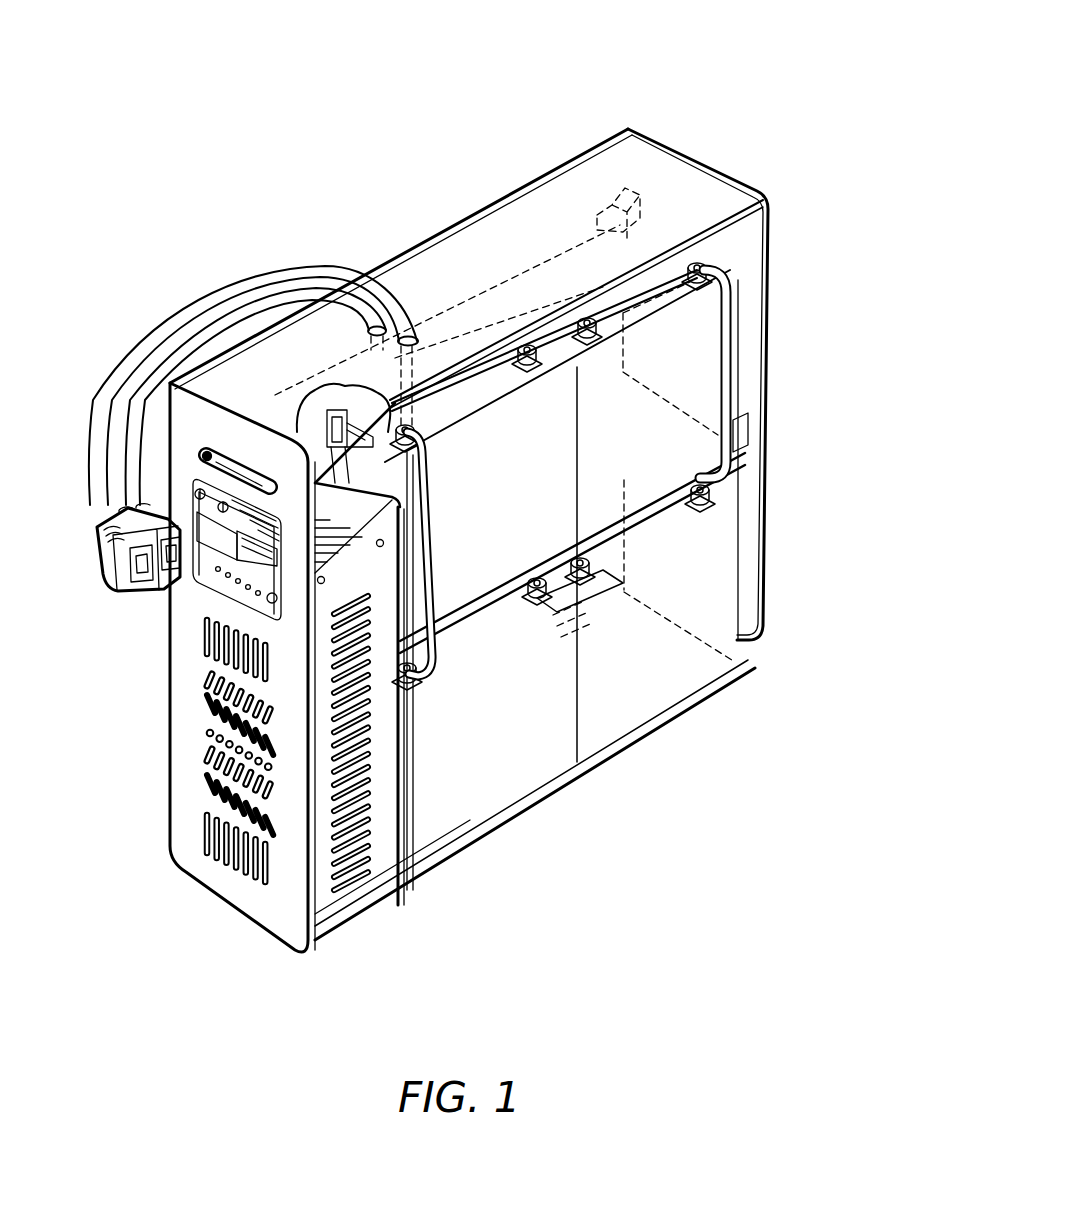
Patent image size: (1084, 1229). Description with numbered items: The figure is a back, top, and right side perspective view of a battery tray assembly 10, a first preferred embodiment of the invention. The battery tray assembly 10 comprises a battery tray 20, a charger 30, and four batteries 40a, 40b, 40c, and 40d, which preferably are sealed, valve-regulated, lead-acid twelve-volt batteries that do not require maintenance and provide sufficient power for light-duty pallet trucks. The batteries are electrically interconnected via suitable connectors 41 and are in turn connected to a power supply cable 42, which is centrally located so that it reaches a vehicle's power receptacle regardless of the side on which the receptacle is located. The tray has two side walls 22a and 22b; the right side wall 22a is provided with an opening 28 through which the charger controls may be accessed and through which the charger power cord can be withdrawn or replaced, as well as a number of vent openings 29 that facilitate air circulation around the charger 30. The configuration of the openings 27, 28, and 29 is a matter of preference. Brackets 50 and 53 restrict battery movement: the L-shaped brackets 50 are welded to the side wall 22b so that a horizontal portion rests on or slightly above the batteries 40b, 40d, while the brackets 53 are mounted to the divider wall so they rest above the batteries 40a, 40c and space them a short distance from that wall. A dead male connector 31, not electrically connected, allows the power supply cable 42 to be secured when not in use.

The battery tray assembly 10 is at (697, 112).
The battery tray 20 is at (708, 188).
The right side wall 22a is at (178, 842).
The left side wall 22b is at (750, 284).
The opening 27 is at (204, 468).
The opening 28 is at (212, 612).
The vent openings 29 is at (255, 875).
The charger 30 is at (367, 888).
The dead male connector 31 is at (180, 582).
The battery 40a is at (532, 523).
The battery 40b is at (665, 447).
The battery 40c is at (512, 772).
The battery 40d is at (657, 690).
The connectors 41 is at (592, 330).
The power supply cable 42 is at (350, 264).
The bracket 50 is at (612, 205).
The bracket 53 is at (326, 432).